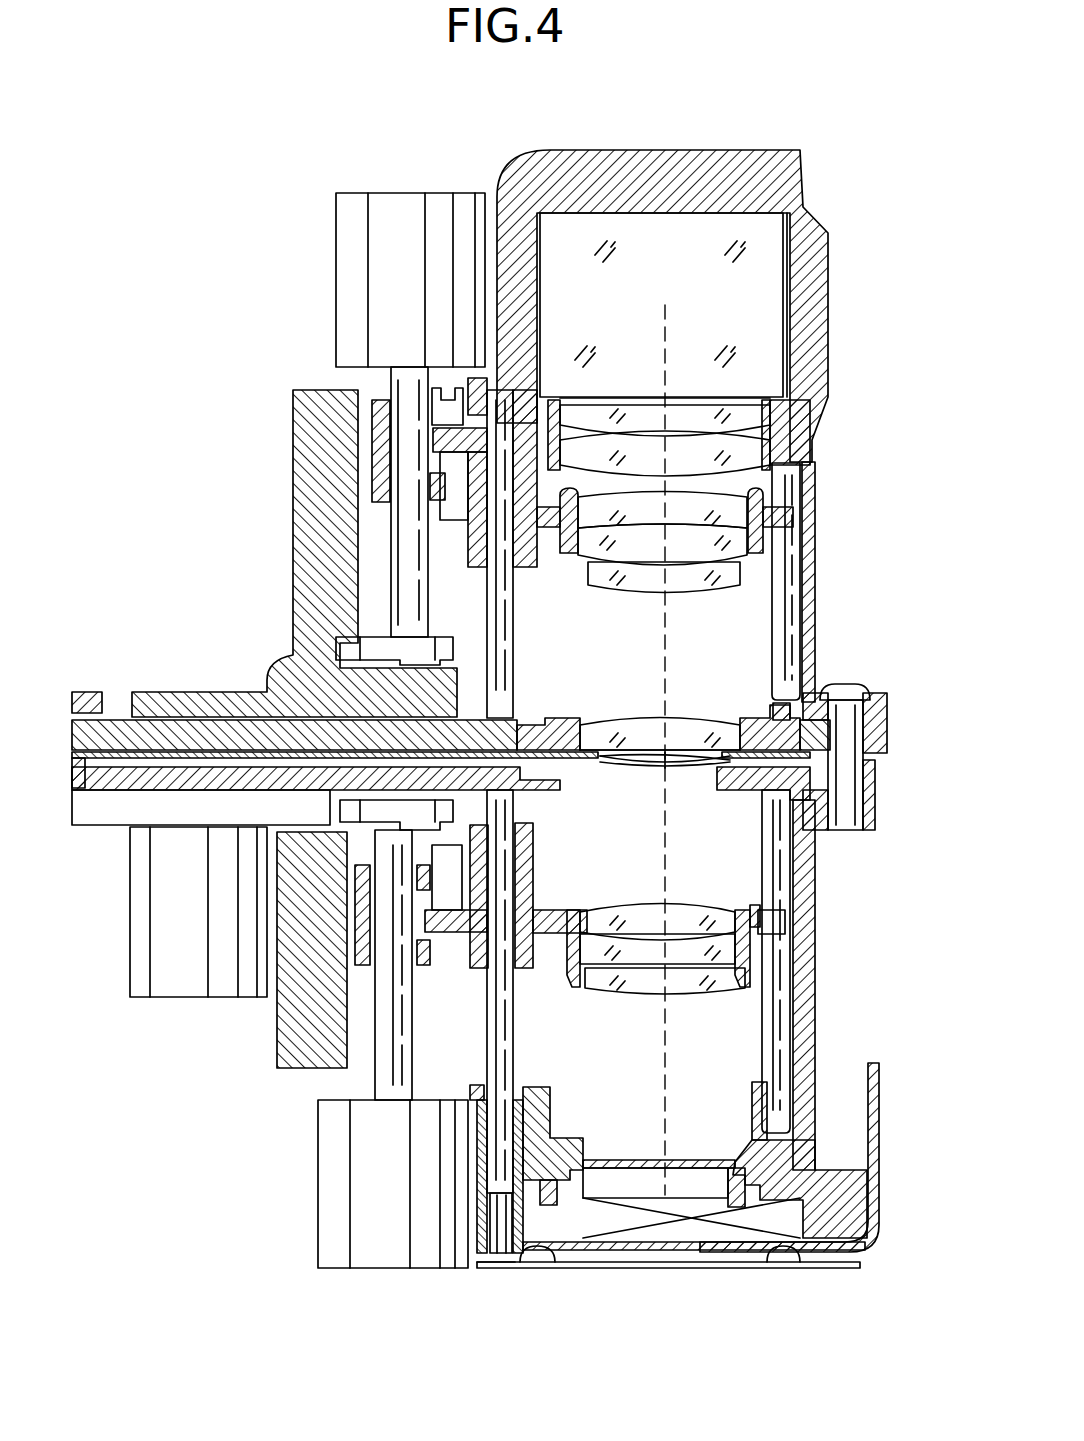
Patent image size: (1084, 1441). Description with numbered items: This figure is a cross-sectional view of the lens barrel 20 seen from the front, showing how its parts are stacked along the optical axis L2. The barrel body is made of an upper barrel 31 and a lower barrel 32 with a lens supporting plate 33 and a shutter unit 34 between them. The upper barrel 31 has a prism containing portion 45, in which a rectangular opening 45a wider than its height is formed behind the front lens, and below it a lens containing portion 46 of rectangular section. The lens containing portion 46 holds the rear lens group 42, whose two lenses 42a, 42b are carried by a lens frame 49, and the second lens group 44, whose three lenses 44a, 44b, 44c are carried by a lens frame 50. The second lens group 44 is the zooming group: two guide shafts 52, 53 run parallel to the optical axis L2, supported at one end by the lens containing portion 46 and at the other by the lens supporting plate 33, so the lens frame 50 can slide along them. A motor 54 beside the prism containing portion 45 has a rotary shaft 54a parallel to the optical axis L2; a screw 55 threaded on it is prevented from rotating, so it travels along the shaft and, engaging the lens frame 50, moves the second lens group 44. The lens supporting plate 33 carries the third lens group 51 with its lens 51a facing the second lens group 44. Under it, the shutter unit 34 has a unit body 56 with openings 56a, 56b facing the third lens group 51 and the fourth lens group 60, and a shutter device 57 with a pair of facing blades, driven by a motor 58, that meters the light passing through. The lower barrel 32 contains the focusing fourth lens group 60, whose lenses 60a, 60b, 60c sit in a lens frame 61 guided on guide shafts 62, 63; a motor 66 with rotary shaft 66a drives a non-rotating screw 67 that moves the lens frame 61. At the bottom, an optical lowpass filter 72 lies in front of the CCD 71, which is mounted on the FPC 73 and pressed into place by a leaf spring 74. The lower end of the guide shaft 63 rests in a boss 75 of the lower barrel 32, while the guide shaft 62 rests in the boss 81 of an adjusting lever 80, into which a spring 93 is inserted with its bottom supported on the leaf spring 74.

The lens barrel 20 is at (662, 134).
The upper barrel 31 is at (288, 457).
The lower barrel 32 is at (816, 1028).
The lens supporting plate 33 is at (562, 716).
The shutter unit 34 is at (72, 782).
The rear lens group 42 is at (912, 367).
The lens 42a is at (755, 410).
The lens 42b is at (755, 452).
The second lens group 44 is at (916, 535).
The lens 44a is at (735, 512).
The lens 44b is at (735, 545).
The lens 44c is at (740, 572).
The prism containing portion 45 is at (830, 300).
The opening 45a is at (742, 235).
The lens containing portion 46 is at (816, 640).
The lens frame 49 is at (770, 462).
The lens frame 50 is at (565, 545).
The third lens group 51 is at (683, 716).
The lens 51a is at (628, 716).
The guide shaft 52 is at (497, 625).
The guide shaft 53 is at (780, 613).
The motor 54 is at (336, 287).
The rotary shaft 54a is at (398, 383).
The screw 55 is at (380, 502).
The unit body 56 is at (122, 795).
The opening 56a is at (712, 770).
The opening 56b is at (598, 780).
The shutter device 57 is at (682, 768).
The motor 58 is at (157, 1000).
The fourth lens group 60 is at (900, 870).
The lens 60a is at (715, 902).
The lens 60b is at (735, 952).
The lens 60c is at (735, 978).
The lens frame 61 is at (560, 904).
The guide shaft 62 is at (507, 1012).
The guide shaft 63 is at (765, 1010).
The motor 66 is at (318, 1190).
The rotary shaft 66a is at (393, 1082).
The screw 67 is at (348, 965).
The CCD image sensor 71 is at (618, 1240).
The optical lowpass filter 72 is at (645, 1162).
The FPC 73 is at (875, 1150).
The leaf spring 74 is at (710, 1268).
The boss 75 is at (752, 1112).
The adjusting lever 80 is at (470, 1250).
The boss 81 is at (528, 1264).
The spring 93 is at (495, 1264).
The optical axis L2 is at (665, 318).